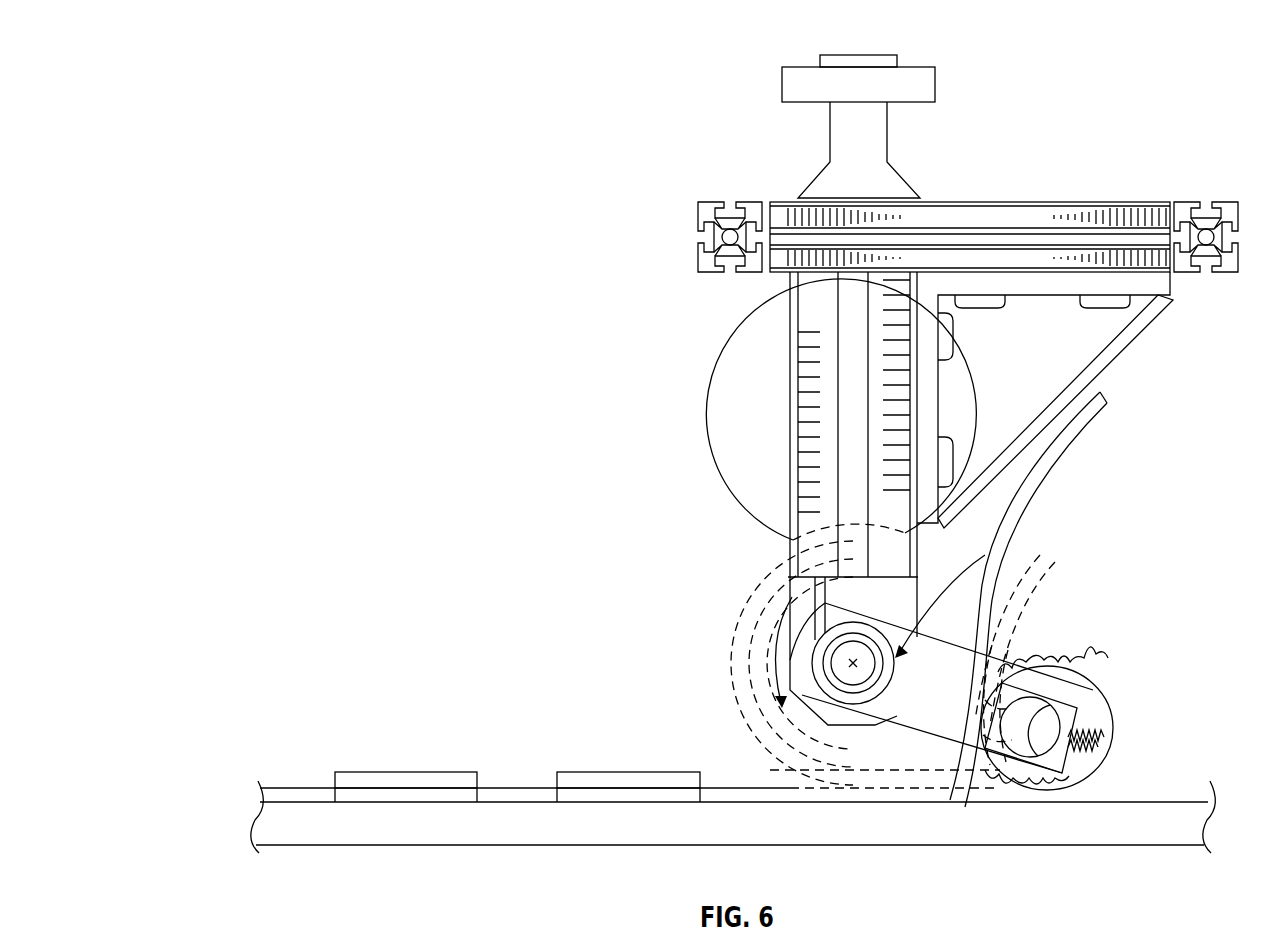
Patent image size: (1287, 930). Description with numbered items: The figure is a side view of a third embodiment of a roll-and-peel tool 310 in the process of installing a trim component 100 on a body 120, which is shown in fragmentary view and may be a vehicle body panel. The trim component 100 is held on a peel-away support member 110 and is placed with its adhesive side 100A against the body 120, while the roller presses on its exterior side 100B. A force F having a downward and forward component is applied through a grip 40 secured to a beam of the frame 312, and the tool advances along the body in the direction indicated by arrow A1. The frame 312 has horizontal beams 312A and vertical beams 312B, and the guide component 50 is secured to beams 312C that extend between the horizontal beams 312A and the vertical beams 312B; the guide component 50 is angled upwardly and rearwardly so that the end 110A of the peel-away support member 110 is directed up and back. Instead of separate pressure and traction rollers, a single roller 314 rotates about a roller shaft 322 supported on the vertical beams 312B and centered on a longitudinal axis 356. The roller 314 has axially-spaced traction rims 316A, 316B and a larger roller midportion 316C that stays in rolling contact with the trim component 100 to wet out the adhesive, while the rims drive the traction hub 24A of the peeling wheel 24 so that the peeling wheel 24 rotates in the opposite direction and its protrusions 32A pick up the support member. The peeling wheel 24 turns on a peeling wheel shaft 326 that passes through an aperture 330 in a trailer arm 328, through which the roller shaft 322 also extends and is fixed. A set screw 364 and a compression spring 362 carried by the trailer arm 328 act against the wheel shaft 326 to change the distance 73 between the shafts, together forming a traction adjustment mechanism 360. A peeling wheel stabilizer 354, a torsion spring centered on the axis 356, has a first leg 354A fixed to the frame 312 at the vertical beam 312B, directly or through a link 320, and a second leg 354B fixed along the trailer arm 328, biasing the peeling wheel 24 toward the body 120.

The roll-and-peel tool 310 is at (562, 80).
The grip 40 is at (793, 85).
The force F is at (905, 22).
The direction of movement A1 is at (993, 123).
The frame 312 is at (970, 212).
The horizontal beams 312A is at (1033, 243).
The vertical beams 312B is at (800, 318).
The beams 312C is at (1150, 300).
The guide component 50 is at (1138, 340).
The peel-away support member 110 is at (1057, 443).
The end of peel-away support member 110A is at (1108, 403).
The body 120 is at (372, 828).
The trim component 100 is at (378, 771).
The adhesive side 100A is at (452, 805).
The exterior side 100B is at (453, 770).
The single roller 314 is at (738, 620).
The traction rim 316A is at (797, 538).
The traction rim 316B is at (800, 540).
The roller midportion 316C is at (748, 660).
The peeling wheel stabilizer 354 is at (853, 663).
The first leg 354A is at (810, 587).
The second leg 354B is at (856, 684).
The longitudinal axis 356 is at (812, 678).
The roller shaft 322 is at (852, 682).
The link 320 is at (907, 612).
The trailer arm 328 is at (1040, 552).
The peeling wheel shaft 326 is at (1080, 676).
The aperture 330 is at (1080, 688).
The peeling wheel 24 is at (1094, 717).
The traction hub 24A is at (1102, 685).
The traction adjustment mechanism 360 is at (1120, 734).
The set screw 364 is at (1110, 752).
The protrusions 32A is at (1073, 660).
The compression spring 362 is at (1015, 662).
The distance 73 is at (965, 825).